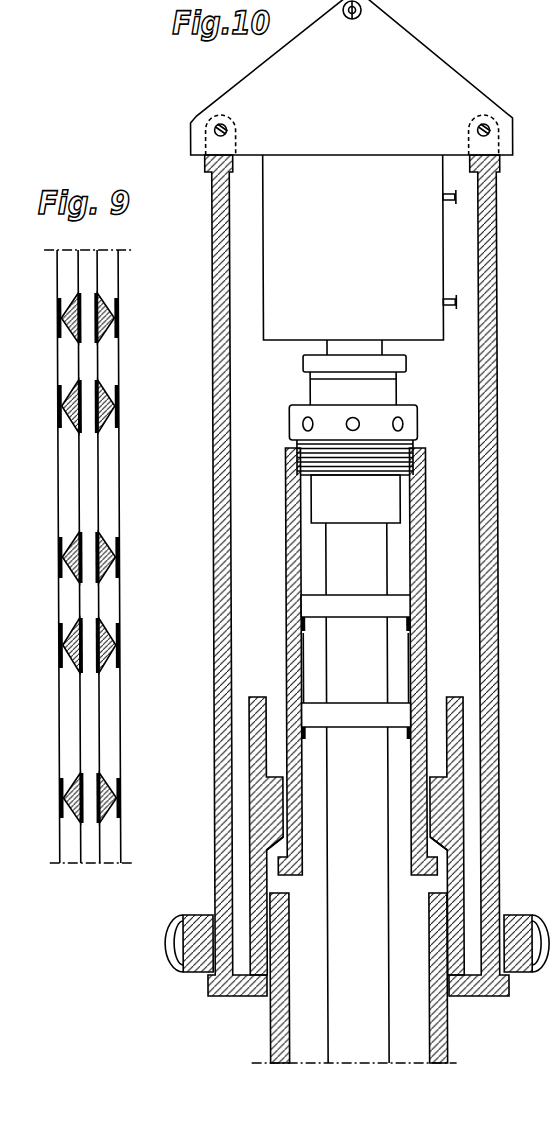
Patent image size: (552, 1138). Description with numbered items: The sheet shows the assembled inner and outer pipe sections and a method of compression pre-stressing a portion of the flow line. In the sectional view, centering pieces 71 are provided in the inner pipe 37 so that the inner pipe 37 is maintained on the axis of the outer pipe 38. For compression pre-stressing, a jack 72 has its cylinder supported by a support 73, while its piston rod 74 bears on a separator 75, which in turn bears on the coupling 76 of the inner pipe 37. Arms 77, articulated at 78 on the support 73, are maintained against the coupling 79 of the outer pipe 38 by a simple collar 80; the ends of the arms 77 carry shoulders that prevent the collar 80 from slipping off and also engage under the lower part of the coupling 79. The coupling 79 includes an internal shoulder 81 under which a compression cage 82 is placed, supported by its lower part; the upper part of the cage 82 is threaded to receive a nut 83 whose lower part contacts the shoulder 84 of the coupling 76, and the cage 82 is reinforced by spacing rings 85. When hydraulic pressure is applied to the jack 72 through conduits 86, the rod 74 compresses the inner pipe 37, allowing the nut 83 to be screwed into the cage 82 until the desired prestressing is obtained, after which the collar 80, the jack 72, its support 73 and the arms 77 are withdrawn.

In FIG. 9, the inner pipe 37 is at (77, 260).
In FIG. 10, the inner pipe 37 is at (334, 998).
In FIG. 9, the outer pipe 38 is at (118, 356).
In FIG. 10, the outer pipe 38 is at (434, 1028).
In FIG. 9, the centering pieces 71 is at (61, 409).
In FIG. 10, the jack 72 is at (358, 169).
In FIG. 10, the support 73 is at (389, 40).
In FIG. 10, the piston rod 74 is at (354, 350).
In FIG. 10, the separator 75 is at (304, 363).
In FIG. 10, the coupling 76 is at (379, 389).
In FIG. 10, the arms 77 is at (221, 231).
In FIG. 10, the articulation 78 is at (214, 127).
In FIG. 10, the coupling 79 is at (458, 758).
In FIG. 10, the collar 80 is at (517, 917).
In FIG. 10, the internal shoulder 81 is at (279, 840).
In FIG. 10, the compression cage 82 is at (418, 535).
In FIG. 10, the nut 83 is at (408, 417).
In FIG. 10, the shoulder 84 is at (312, 478).
In FIG. 10, the spacing rings 85 is at (355, 606).
In FIG. 10, the conduits 86 is at (452, 205).